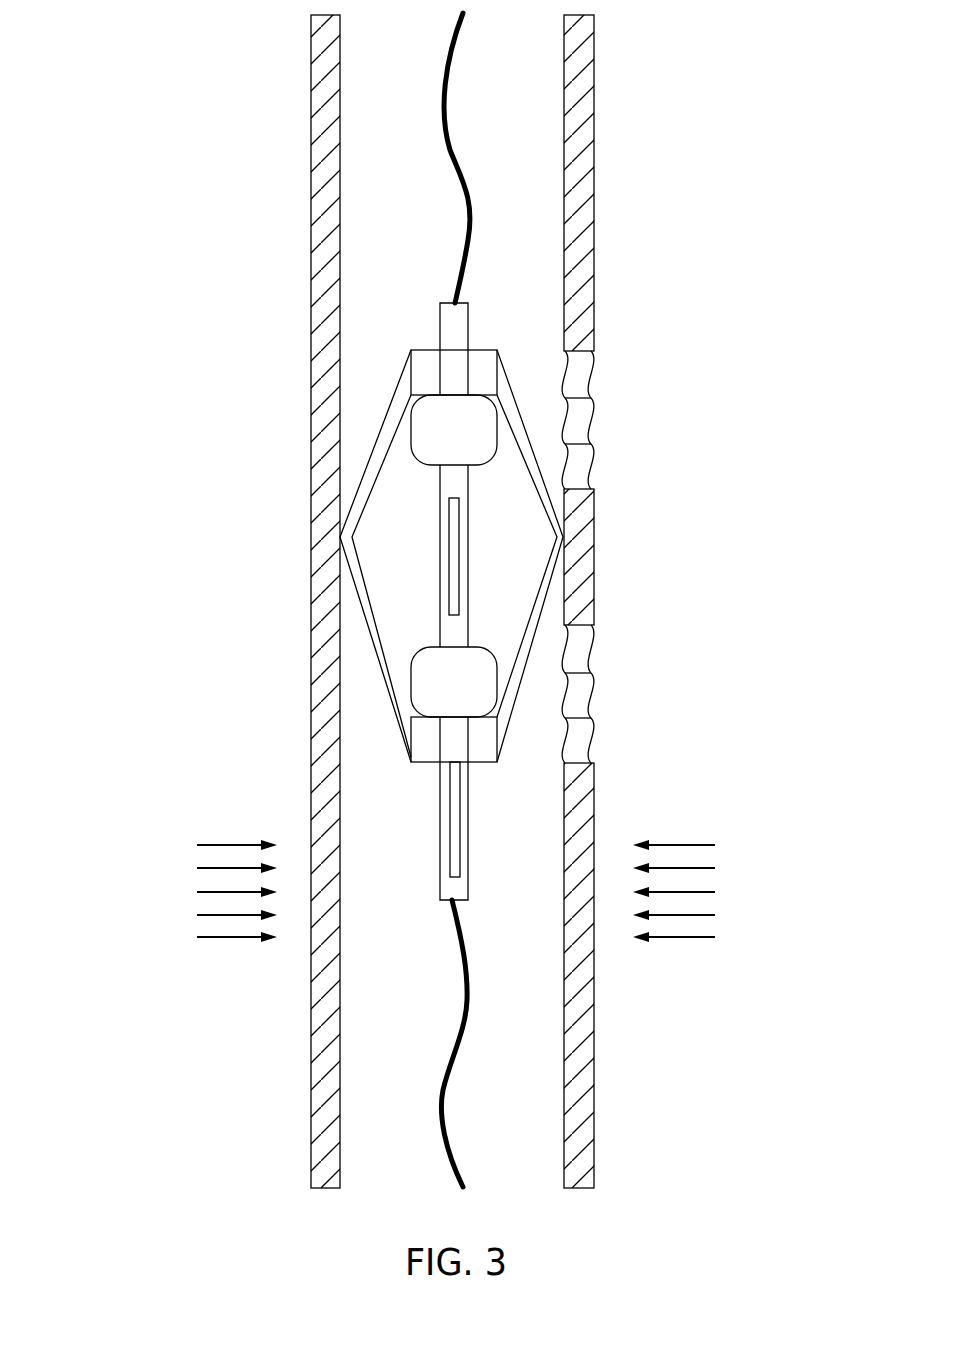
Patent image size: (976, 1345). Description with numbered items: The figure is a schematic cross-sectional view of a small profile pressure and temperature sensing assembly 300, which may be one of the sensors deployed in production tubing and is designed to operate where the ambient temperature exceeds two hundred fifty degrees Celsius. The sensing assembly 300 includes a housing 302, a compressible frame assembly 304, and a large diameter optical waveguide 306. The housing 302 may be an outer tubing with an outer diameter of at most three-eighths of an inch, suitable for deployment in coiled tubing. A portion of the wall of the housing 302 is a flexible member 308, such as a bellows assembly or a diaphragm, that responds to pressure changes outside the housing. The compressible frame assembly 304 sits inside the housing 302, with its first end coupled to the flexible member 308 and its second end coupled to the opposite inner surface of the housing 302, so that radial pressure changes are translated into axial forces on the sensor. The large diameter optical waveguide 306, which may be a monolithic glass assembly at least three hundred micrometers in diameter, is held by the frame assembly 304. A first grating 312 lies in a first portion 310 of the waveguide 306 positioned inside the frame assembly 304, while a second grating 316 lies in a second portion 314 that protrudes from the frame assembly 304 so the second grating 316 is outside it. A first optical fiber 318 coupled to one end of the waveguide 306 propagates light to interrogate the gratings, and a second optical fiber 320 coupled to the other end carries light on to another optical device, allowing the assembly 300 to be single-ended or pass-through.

The sensing assembly 300 is at (124, 66).
The housing 302 is at (323, 172).
The compressible frame assembly 304 is at (373, 472).
The large diameter optical waveguide 306 is at (455, 323).
The flexible member 308 is at (618, 353).
The first portion 310 is at (453, 630).
The first grating 312 is at (453, 580).
The second portion 314 is at (453, 692).
The second grating 316 is at (455, 800).
The first optical fiber 318 is at (457, 145).
The second optical fiber 320 is at (447, 1117).